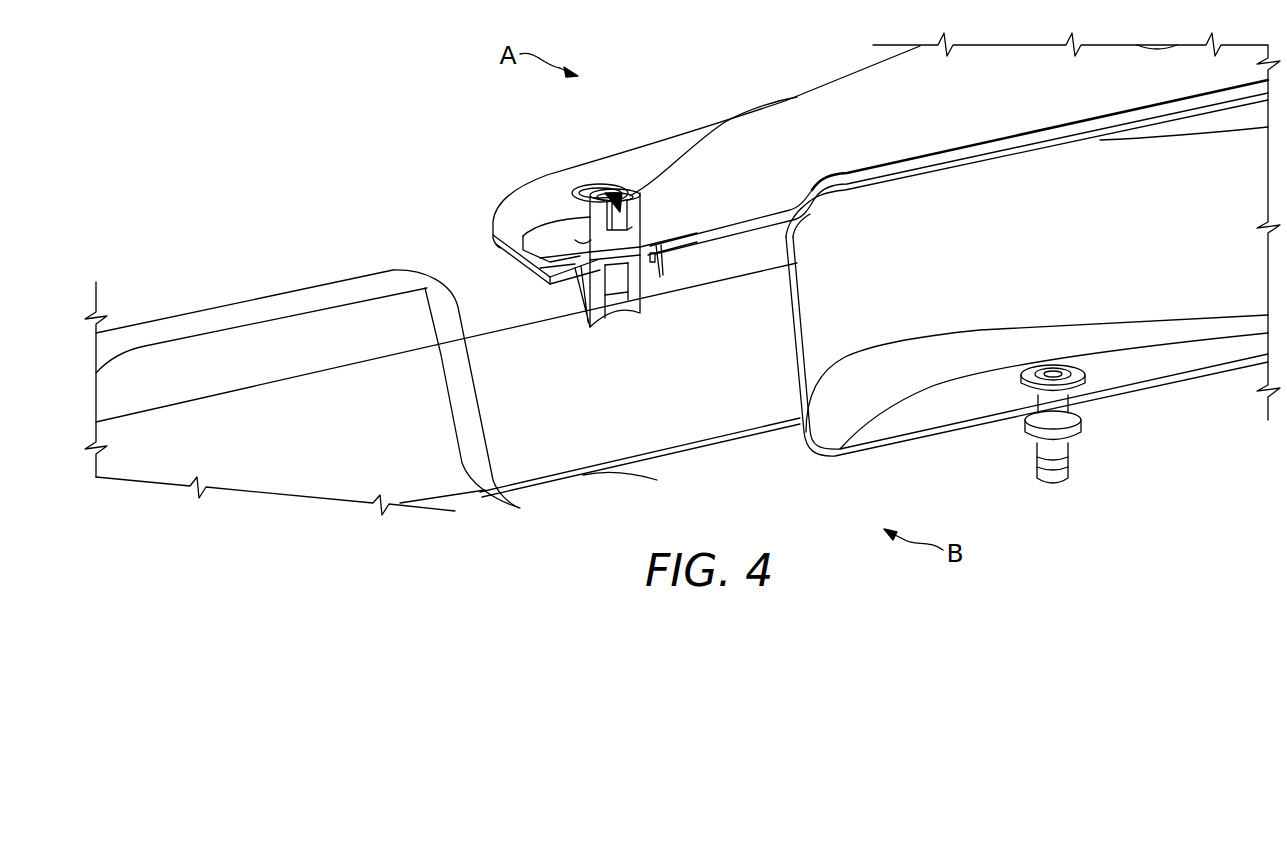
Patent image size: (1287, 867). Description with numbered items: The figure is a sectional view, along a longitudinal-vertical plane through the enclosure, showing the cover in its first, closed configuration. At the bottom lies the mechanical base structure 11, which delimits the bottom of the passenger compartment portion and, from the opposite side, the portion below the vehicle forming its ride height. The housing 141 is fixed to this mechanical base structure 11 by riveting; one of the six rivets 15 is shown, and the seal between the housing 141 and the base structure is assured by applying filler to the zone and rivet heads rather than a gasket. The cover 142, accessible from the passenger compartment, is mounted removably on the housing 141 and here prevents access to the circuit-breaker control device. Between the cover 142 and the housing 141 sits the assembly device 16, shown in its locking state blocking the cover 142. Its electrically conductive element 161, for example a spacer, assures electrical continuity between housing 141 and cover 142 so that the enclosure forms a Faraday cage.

The mechanical base structure 11 is at (497, 316).
The cover 142 is at (825, 105).
The electrically conductive element 161 is at (705, 222).
The assembly device 16 is at (622, 246).
The housing 141 is at (885, 430).
The rivet 15 is at (1077, 443).